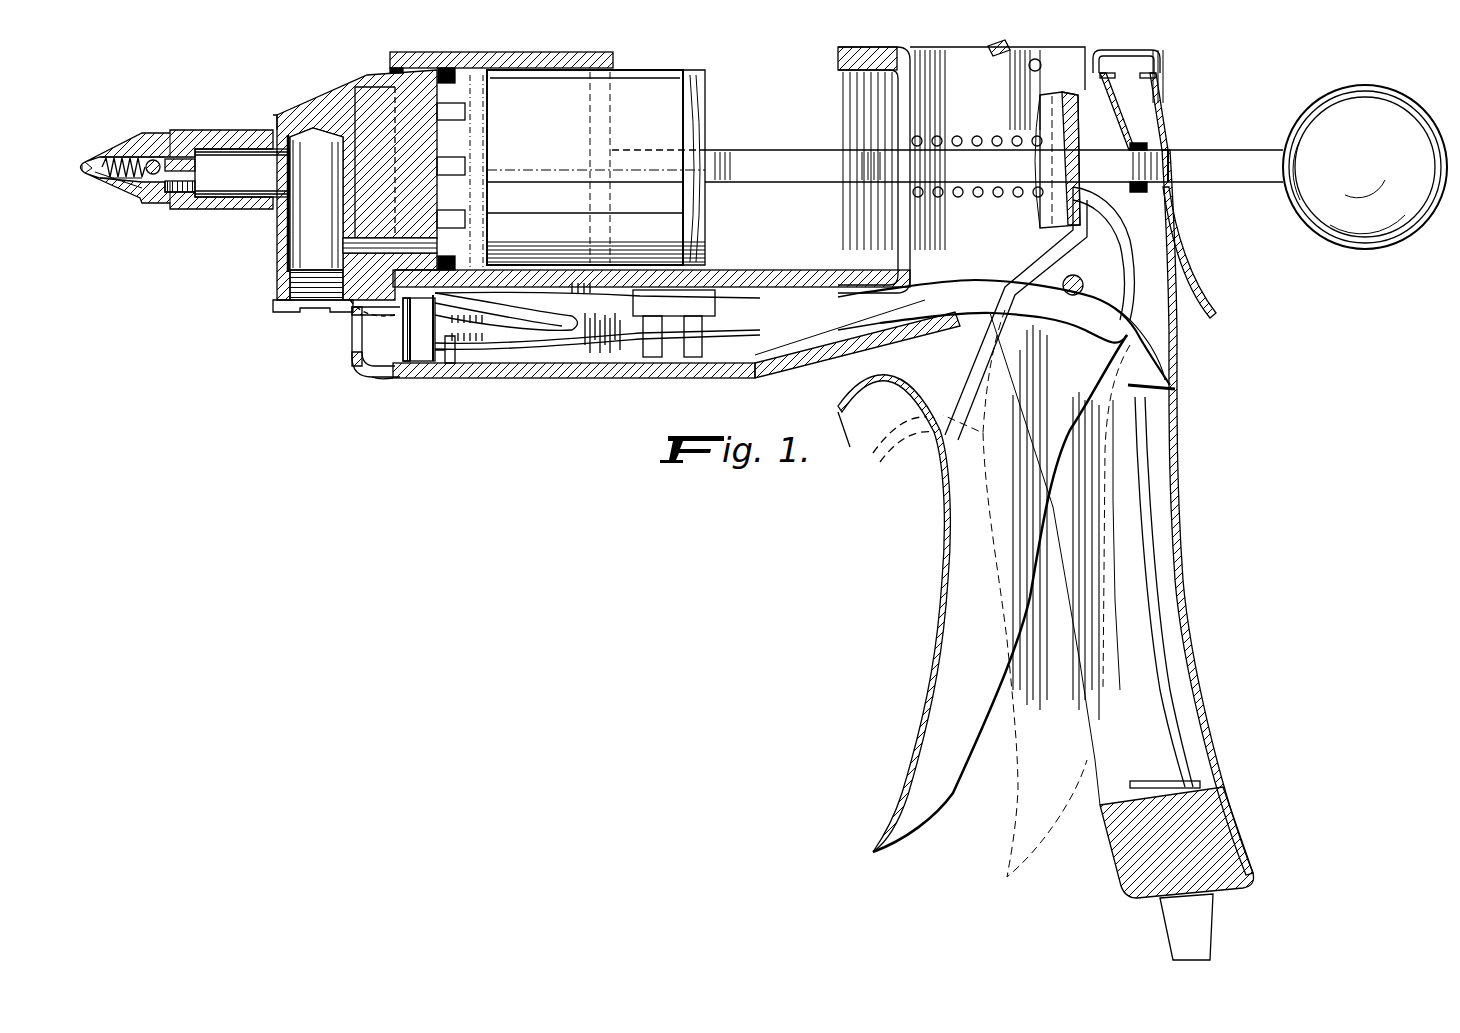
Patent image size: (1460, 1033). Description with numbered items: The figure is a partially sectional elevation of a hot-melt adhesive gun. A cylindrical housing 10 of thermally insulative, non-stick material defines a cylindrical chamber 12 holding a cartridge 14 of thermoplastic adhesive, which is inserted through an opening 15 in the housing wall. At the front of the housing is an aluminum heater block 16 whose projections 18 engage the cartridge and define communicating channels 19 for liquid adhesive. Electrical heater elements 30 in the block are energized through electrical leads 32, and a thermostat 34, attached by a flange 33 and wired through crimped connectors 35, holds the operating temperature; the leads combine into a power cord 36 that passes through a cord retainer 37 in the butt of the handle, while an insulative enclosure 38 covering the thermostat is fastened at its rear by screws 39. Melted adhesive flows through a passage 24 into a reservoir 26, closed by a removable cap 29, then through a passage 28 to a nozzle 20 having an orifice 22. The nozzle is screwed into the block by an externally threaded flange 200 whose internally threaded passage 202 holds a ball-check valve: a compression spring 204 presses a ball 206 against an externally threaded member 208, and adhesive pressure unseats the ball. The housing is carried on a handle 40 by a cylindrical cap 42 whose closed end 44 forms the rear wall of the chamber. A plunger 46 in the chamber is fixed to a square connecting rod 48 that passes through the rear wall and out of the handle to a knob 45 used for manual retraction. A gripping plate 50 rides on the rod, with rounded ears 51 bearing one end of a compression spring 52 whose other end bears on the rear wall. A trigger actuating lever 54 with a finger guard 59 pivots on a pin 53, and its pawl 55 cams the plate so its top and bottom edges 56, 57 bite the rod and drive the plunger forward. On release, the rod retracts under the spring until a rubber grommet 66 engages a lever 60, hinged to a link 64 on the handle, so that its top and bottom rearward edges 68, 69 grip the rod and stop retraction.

The housing 10 is at (760, 283).
The cylindrical chamber 12 is at (524, 228).
The cartridge 14 is at (596, 167).
The opening 15 is at (757, 90).
The heater block 16 is at (345, 122).
The projections 18 is at (455, 227).
The communicating channels 19 is at (448, 170).
The nozzle 20 is at (85, 160).
The orifice 22 is at (84, 182).
The passage 24 is at (345, 247).
The reservoir 26 is at (300, 262).
The passage 28 is at (253, 197).
The removable cap 29 is at (278, 306).
The electrical heater elements 30 is at (343, 160).
The electrical leads 32 is at (360, 311).
The flange 33 is at (372, 362).
The thermostat 34 is at (425, 345).
The crimped connectors 35 is at (450, 345).
The power cord 36 is at (1123, 510).
The cord retainer 37 is at (1207, 825).
The insulative enclosure 38 is at (680, 373).
The screws 39 is at (380, 372).
The handle 40 is at (1177, 340).
The cylindrical cap 42 is at (905, 322).
The closed end 44 is at (918, 237).
The knob 45 is at (1363, 227).
The plunger 46 is at (695, 212).
The connecting rod 48 is at (745, 177).
The gripping plate 50 is at (1140, 117).
The rounded ears 51 is at (1033, 130).
The compression spring 52 is at (957, 137).
The pin 53 is at (1075, 276).
The trigger actuating lever 54 is at (930, 760).
The pawl 55 is at (1083, 220).
The top edge 56 is at (1073, 150).
The bottom edge 57 is at (1078, 187).
The finger guard 59 is at (842, 412).
The lever 60 is at (1190, 280).
The link 64 is at (1163, 63).
The rubber grommet 66 is at (1180, 187).
The top rearward edge 68 is at (1167, 150).
The bottom rearward edge 69 is at (1180, 183).
The externally threaded flange 200 is at (186, 193).
The internally threaded passage 202 is at (205, 168).
The compression spring 204 is at (122, 188).
The ball 206 is at (158, 146).
The externally threaded member 208 is at (182, 150).